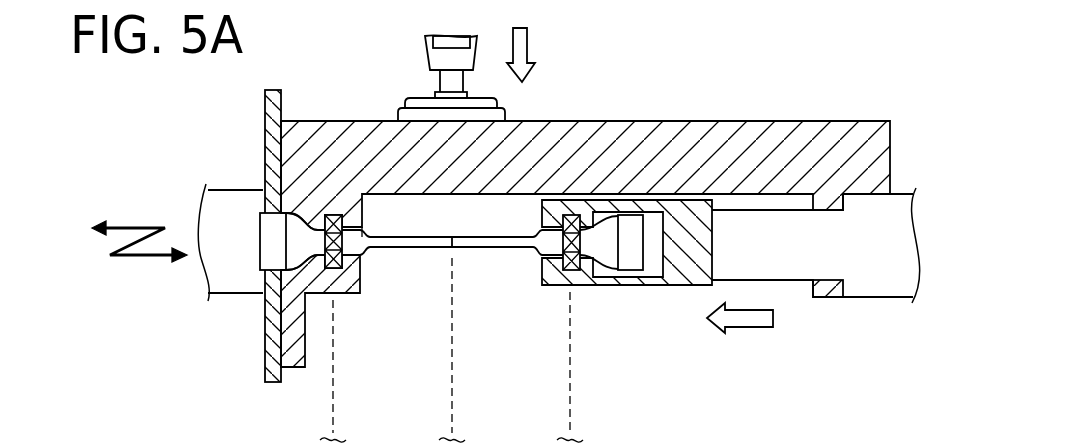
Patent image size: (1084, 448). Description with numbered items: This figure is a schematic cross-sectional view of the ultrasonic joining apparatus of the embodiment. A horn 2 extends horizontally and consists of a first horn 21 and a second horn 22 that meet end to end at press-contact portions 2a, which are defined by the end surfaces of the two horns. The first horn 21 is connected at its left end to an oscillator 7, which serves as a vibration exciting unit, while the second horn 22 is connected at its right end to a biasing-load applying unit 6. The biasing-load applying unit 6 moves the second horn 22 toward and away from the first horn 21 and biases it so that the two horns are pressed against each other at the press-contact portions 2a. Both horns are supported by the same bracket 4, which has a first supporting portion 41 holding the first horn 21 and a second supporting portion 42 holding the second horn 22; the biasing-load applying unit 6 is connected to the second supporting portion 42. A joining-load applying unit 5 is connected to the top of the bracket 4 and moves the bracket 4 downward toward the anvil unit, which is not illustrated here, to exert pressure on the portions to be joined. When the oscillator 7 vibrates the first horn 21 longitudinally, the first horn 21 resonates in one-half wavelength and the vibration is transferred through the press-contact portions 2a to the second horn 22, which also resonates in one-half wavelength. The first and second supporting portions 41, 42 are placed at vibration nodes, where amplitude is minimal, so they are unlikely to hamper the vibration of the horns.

The horn 2 is at (392, 249).
The press-contact portions 2a is at (457, 250).
The first horn 21 is at (419, 250).
The second horn 22 is at (509, 250).
The bracket 4 is at (690, 150).
The first supporting portion 41 is at (331, 270).
The second supporting portion 42 is at (569, 272).
The joining-load applying unit 5 is at (438, 62).
The biasing-load applying unit 6 is at (900, 198).
The oscillator 7 is at (238, 203).